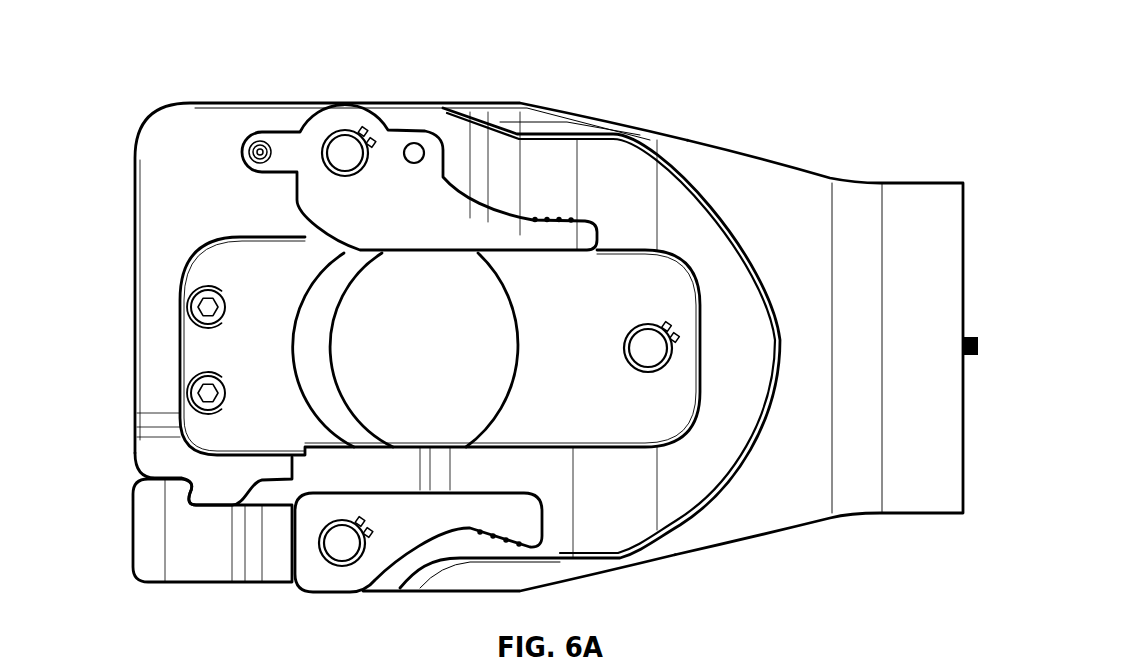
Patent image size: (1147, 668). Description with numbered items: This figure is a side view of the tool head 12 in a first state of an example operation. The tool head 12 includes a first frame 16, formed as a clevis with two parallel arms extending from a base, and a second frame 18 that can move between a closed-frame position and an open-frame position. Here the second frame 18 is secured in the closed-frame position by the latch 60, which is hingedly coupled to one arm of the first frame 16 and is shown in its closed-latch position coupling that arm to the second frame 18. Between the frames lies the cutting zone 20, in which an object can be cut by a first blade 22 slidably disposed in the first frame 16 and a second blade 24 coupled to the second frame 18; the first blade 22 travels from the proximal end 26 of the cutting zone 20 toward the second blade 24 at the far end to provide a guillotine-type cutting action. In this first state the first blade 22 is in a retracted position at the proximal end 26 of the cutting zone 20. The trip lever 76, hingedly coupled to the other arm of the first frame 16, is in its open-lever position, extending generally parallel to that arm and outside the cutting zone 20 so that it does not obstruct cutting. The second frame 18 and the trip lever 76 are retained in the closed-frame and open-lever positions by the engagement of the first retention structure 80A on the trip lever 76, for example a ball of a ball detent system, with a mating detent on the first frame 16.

The tool head 12 is at (731, 109).
The first frame 16 is at (802, 190).
The second frame 18 is at (152, 222).
The cutting zone 20 is at (437, 357).
The first blade 22 is at (522, 320).
The second blade 24 is at (320, 330).
The proximal end 26 is at (497, 403).
The latch 60 is at (200, 567).
The trip lever 76 is at (397, 143).
The first retention structure 80A is at (417, 137).